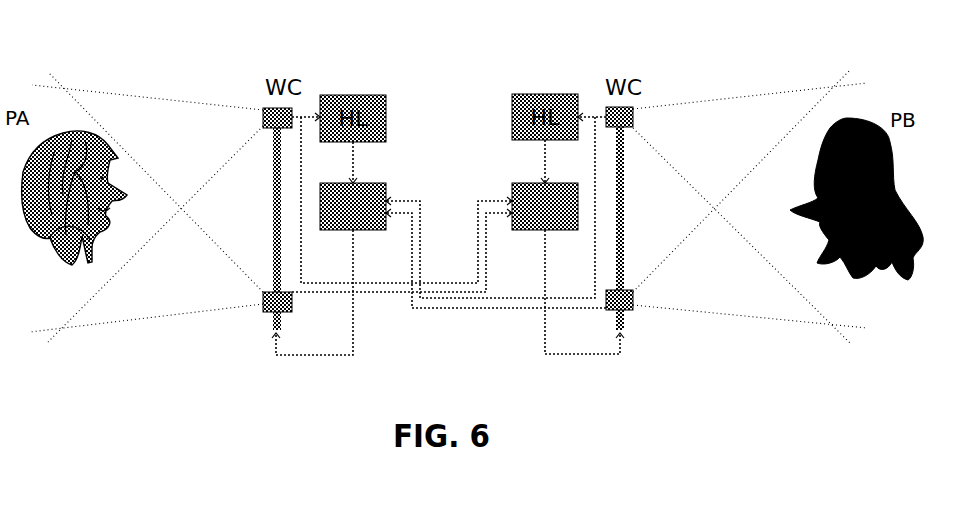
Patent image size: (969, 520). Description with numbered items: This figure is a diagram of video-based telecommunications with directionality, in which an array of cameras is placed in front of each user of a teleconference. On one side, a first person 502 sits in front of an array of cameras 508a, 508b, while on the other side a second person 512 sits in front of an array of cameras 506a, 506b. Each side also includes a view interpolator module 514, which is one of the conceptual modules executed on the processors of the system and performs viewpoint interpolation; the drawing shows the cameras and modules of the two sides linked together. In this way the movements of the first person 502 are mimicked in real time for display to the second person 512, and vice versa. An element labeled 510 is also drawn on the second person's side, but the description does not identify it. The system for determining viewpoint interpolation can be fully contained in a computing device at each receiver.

The first person 502 is at (63, 133).
The camera 508a is at (265, 108).
The camera 508b is at (265, 308).
The view interpolator module 514 is at (380, 185).
The camera 506a is at (633, 107).
The camera 506b is at (633, 312).
The display at participant B 510 is at (628, 197).
The second person 512 is at (875, 120).